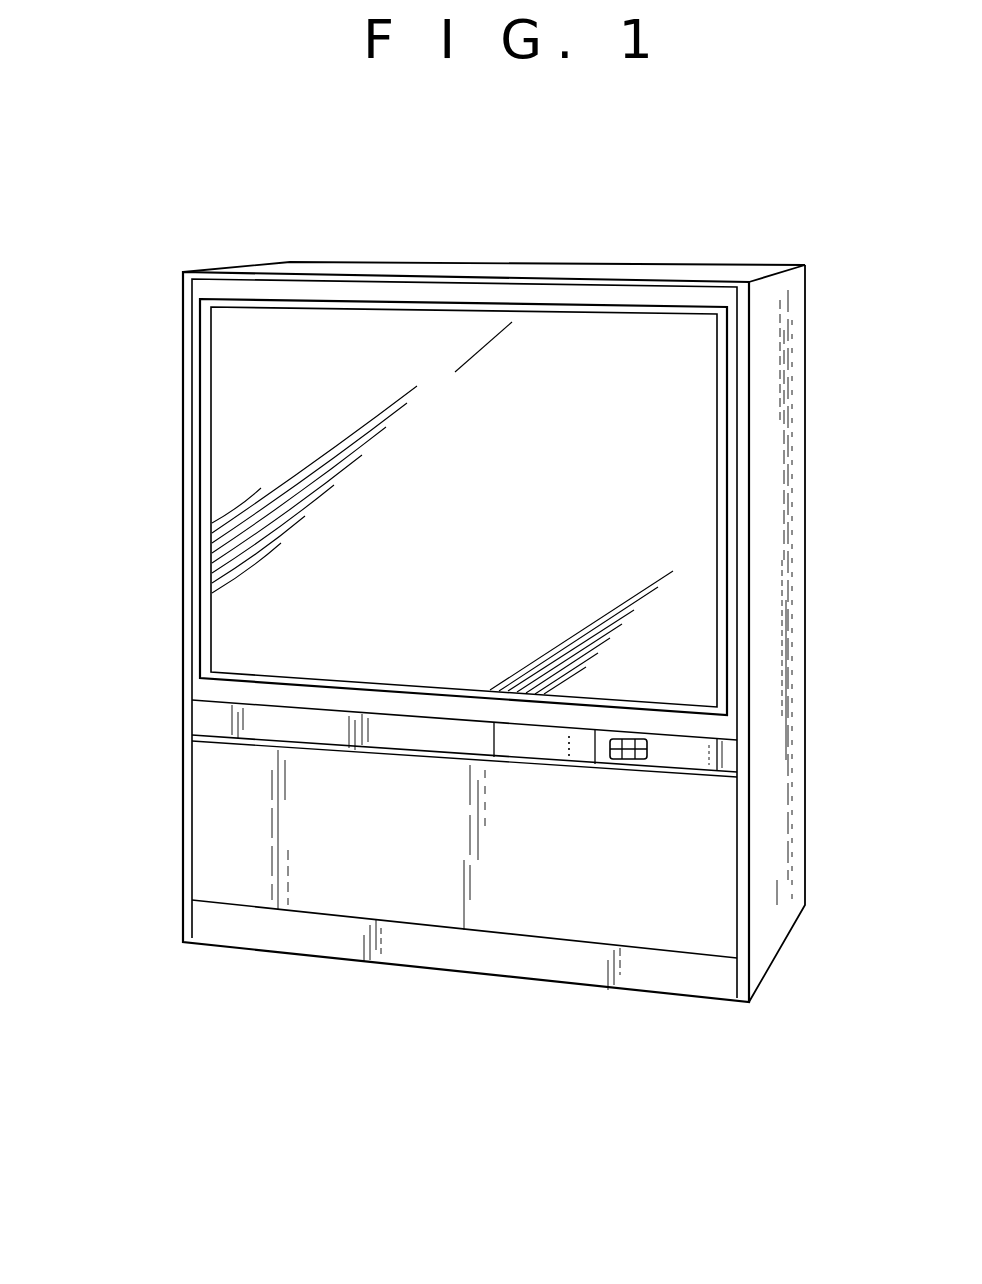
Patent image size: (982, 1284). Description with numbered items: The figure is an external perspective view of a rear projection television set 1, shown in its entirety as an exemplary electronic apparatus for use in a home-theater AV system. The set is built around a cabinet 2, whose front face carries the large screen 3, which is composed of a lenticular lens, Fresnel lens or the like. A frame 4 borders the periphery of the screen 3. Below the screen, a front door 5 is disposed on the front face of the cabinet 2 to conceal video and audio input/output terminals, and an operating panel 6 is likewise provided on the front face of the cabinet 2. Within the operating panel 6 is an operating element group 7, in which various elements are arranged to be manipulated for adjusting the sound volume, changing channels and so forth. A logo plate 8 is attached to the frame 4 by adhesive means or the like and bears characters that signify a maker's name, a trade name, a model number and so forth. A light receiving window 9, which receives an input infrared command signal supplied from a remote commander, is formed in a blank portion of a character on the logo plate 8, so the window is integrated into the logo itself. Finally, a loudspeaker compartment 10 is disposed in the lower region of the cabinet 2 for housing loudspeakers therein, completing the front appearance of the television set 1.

The projection television set 1 is at (433, 1124).
The cabinet 2 is at (183, 493).
The screen 3 is at (237, 361).
The frame 4 is at (433, 292).
The front door 5 is at (533, 742).
The operating panel 6 is at (693, 758).
The operating element group 7 is at (628, 758).
The logo plate 8 is at (437, 708).
The light receiving window 9 is at (460, 700).
The loudspeaker compartment 10 is at (330, 873).